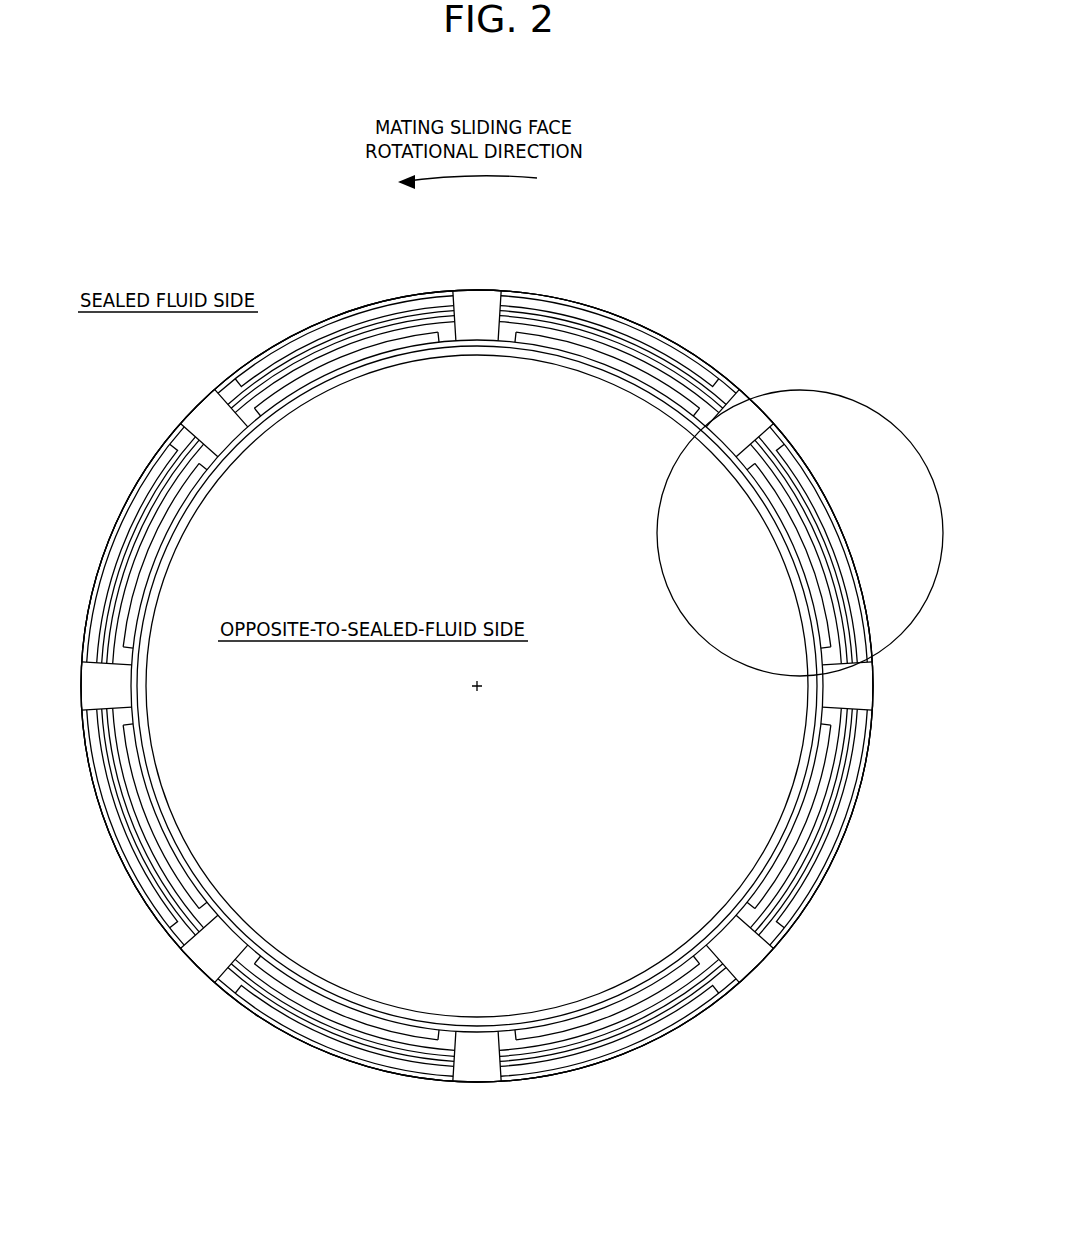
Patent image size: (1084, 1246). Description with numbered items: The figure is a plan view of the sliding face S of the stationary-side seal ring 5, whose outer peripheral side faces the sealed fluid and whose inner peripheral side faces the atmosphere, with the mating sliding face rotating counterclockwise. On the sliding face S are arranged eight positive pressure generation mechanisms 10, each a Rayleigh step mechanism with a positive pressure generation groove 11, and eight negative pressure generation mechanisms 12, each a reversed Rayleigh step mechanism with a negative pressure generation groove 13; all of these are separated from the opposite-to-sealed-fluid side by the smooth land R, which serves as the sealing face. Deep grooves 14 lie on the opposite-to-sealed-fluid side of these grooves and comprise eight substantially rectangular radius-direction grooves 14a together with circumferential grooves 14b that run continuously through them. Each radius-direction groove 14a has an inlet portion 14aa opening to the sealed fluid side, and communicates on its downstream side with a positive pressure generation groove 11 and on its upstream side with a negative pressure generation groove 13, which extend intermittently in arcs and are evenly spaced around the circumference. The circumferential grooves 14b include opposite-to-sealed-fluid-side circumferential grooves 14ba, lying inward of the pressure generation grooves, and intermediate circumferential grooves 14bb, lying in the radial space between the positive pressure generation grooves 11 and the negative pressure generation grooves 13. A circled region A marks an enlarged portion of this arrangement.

The positive pressure generation mechanism 10 is at (364, 301).
The positive pressure generation groove 11 is at (350, 324).
The negative pressure generation mechanism 12 is at (597, 310).
The negative pressure generation groove 13 is at (697, 348).
The deep groove 14 is at (477, 651).
The radius-direction groove 14a is at (781, 448).
The inlet portion 14aa is at (462, 288).
The circumferential groove 14b is at (477, 686).
The opposite-to-sealed-fluid-side circumferential groove 14ba is at (287, 425).
The intermediate circumferential groove 14bb is at (330, 445).
The stationary-side seal ring 5 is at (648, 325).
The sliding face S is at (712, 388).
The land R is at (400, 390).
The enlarged portion A is at (838, 402).